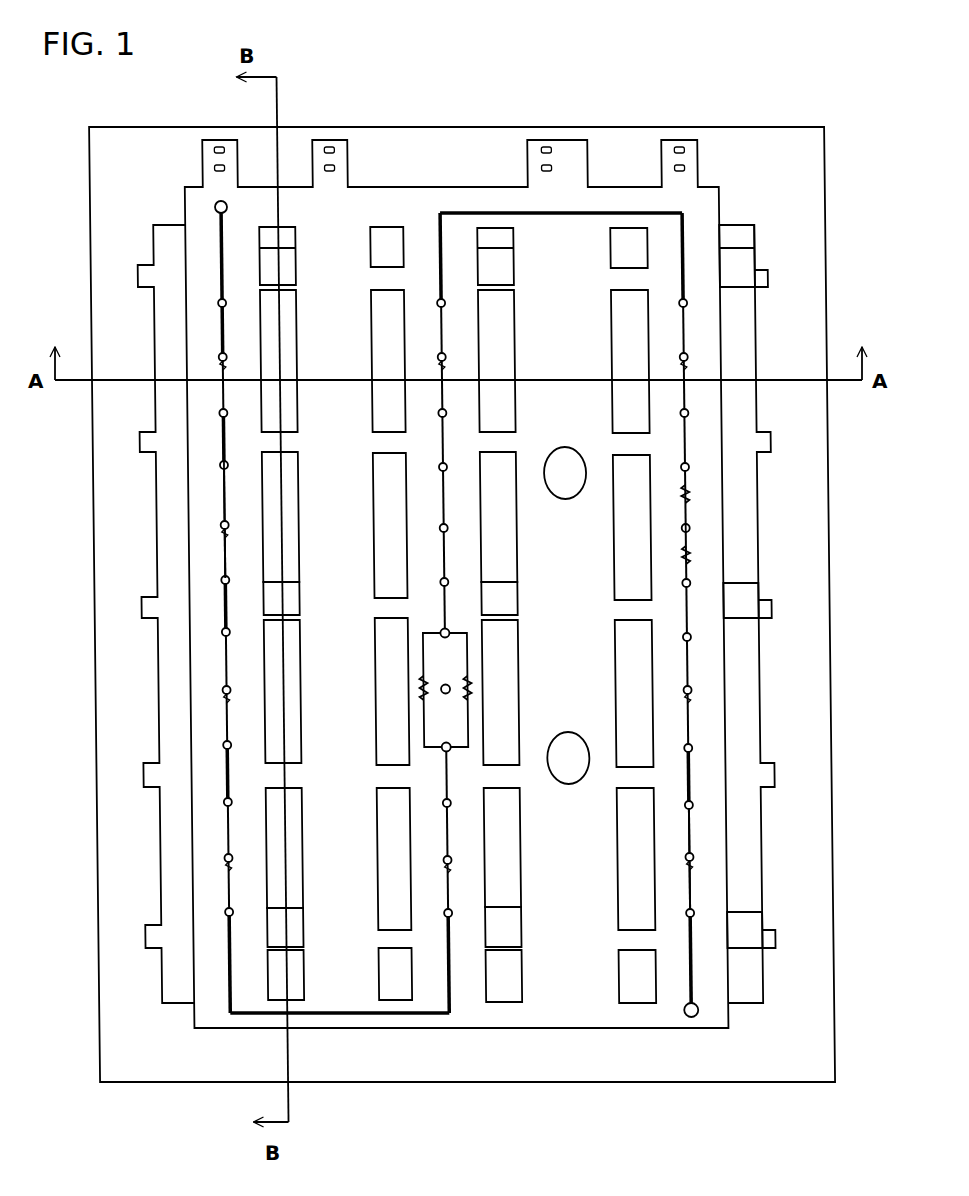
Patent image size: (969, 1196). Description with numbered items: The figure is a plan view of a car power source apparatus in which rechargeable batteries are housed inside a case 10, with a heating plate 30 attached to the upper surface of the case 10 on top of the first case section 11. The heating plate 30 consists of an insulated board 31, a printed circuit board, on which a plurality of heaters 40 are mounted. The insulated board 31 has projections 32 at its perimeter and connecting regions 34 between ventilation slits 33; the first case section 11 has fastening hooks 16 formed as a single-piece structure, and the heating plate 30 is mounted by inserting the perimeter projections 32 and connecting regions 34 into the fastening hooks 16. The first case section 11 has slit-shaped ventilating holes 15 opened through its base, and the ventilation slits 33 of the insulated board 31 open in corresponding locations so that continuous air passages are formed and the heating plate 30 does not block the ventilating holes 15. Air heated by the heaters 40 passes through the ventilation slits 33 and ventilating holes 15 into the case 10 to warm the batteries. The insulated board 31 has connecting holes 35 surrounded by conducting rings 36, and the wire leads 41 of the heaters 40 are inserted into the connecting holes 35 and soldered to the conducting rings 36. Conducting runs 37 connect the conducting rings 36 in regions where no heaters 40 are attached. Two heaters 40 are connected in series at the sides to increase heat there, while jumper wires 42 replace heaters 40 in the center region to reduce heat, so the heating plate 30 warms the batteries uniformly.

The case 10 is at (848, 566).
The first case section 11 is at (813, 718).
The ventilating holes 15 is at (153, 682).
The fastening hooks 16 is at (294, 270).
The heating plate 30 is at (578, 1066).
The insulated board 31 is at (552, 1010).
The projections 32 is at (766, 282).
The ventilation slits 33 is at (366, 351).
The connecting regions 34 is at (284, 285).
The connecting holes 35 is at (215, 466).
The conducting rings 36 is at (227, 465).
The conducting runs 37 is at (554, 215).
The heaters 40 is at (221, 530).
The wire leads 41 is at (221, 495).
The jumper wires 42 is at (438, 500).